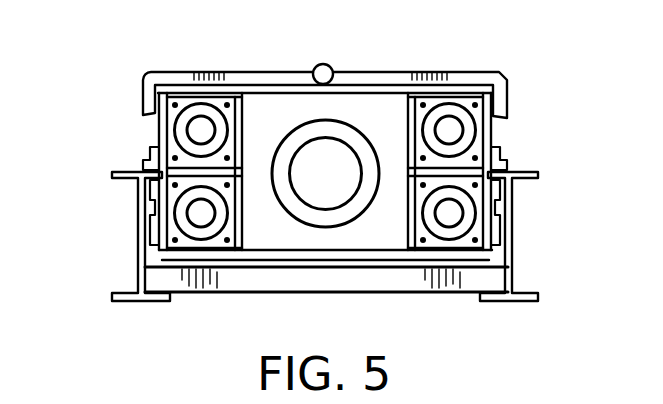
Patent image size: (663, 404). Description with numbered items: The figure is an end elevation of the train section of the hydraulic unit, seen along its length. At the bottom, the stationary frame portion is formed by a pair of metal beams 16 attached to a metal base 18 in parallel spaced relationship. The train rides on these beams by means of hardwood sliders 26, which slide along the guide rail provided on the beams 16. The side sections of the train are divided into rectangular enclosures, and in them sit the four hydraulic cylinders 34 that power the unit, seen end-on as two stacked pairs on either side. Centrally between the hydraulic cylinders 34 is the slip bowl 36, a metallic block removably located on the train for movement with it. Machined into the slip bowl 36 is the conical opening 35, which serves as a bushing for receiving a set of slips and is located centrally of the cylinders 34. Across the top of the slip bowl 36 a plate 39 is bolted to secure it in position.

The metal beams 16 is at (140, 253).
The metal base 18 is at (367, 283).
The hardwood sliders 26 is at (150, 162).
The hydraulic cylinders 34 is at (195, 130).
The conical opening 35 is at (313, 150).
The slip bowl 36 is at (361, 106).
The plate 39 is at (463, 80).